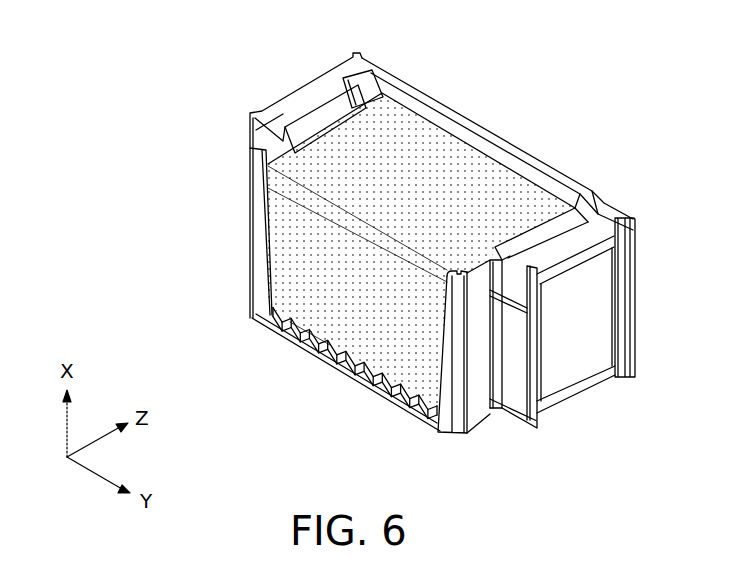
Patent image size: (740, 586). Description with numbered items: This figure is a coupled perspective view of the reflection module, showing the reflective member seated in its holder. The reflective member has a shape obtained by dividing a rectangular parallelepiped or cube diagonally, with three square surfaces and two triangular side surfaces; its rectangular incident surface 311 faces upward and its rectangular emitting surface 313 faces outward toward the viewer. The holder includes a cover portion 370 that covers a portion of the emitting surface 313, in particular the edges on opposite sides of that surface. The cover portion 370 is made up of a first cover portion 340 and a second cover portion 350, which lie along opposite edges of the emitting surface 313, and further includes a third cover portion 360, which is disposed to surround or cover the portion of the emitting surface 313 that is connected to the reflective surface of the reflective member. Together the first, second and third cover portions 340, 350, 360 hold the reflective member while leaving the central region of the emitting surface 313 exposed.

The incident surface 311 is at (468, 172).
The emitting surface 313 is at (352, 305).
The first cover portion 340 is at (257, 282).
The second cover portion 350 is at (436, 410).
The third cover portion 360 is at (349, 372).
The cover portion 370 is at (110, 2).